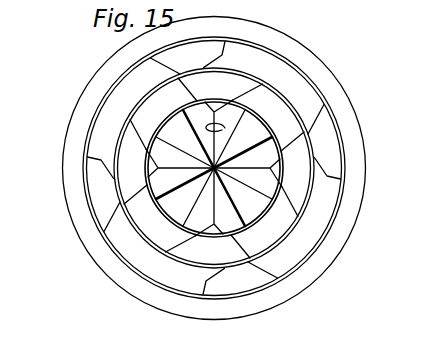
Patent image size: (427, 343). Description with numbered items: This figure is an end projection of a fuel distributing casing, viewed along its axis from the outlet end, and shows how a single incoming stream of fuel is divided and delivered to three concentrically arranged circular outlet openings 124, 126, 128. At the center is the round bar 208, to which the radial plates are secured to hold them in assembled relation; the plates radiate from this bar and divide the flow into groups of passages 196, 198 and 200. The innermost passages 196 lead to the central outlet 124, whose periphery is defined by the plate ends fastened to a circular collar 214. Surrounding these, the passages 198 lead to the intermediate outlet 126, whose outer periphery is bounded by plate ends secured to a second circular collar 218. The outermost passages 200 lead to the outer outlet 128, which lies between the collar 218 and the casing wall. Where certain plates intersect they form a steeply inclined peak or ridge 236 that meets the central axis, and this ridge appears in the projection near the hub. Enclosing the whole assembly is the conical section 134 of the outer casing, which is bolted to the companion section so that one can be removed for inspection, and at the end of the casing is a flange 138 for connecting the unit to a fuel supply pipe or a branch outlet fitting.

The central outlet opening 124 is at (101, 258).
The intermediate outlet opening 126 is at (98, 207).
The outer outlet opening 128 is at (90, 161).
The conical section 134 is at (341, 140).
The flange 138 is at (334, 257).
The passages 196 is at (204, 142).
The passages 198 is at (221, 94).
The passages 200 is at (195, 66).
The round bar 208 is at (294, 199).
The circular collar 214 is at (283, 143).
The circular collar 218 is at (312, 108).
The peak or ridge 236 is at (225, 127).